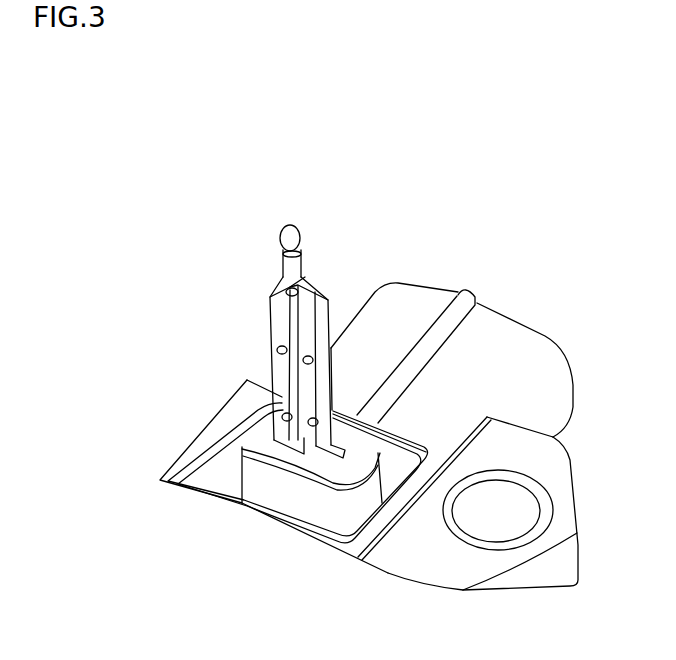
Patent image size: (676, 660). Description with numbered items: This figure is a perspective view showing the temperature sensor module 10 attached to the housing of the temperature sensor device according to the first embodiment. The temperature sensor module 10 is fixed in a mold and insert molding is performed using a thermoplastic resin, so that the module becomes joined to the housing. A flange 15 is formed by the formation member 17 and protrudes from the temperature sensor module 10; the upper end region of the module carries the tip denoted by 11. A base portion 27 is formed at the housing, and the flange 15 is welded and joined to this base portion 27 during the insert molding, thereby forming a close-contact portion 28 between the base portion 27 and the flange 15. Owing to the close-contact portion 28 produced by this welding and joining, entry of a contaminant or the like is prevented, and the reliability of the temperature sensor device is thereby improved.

The temperature sensor module 10 is at (281, 313).
The pin tip 11 is at (298, 230).
The flange 15 is at (243, 448).
The formation member 17 is at (282, 366).
The base portion 27 is at (272, 501).
The close-contact portion 28 is at (352, 494).